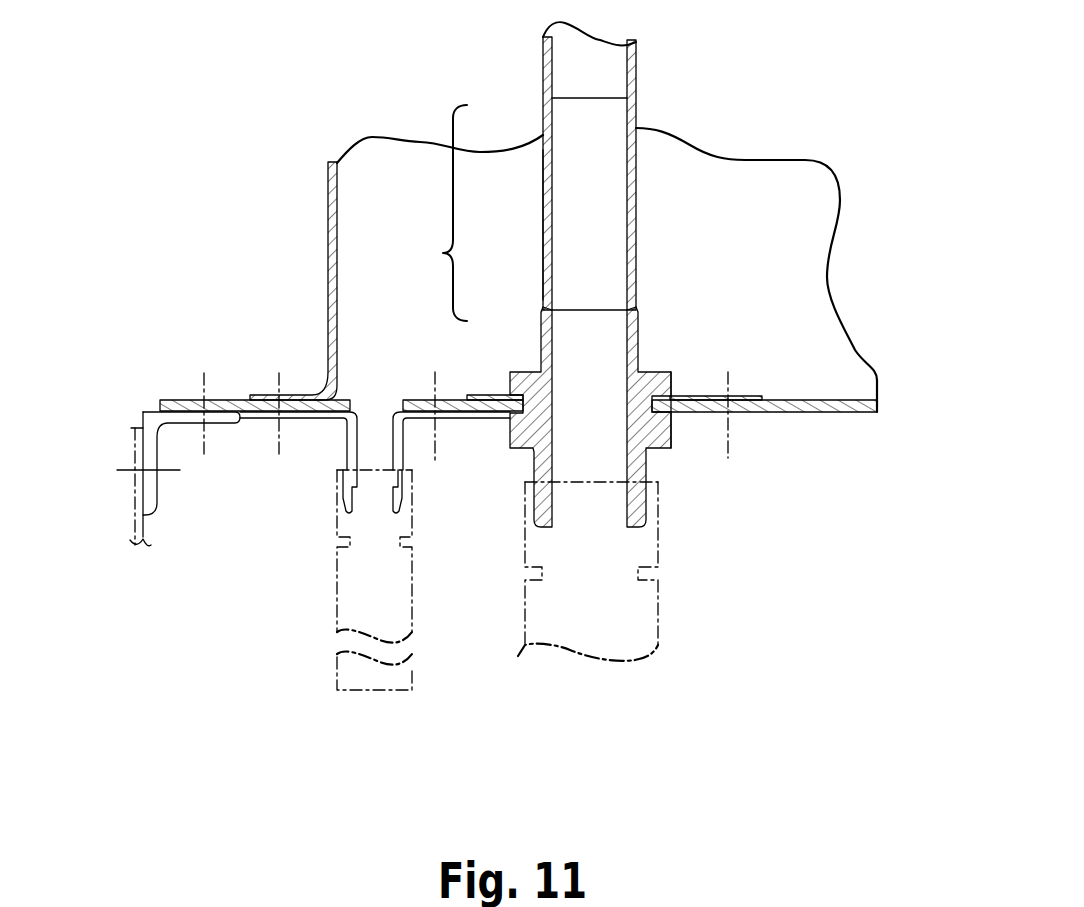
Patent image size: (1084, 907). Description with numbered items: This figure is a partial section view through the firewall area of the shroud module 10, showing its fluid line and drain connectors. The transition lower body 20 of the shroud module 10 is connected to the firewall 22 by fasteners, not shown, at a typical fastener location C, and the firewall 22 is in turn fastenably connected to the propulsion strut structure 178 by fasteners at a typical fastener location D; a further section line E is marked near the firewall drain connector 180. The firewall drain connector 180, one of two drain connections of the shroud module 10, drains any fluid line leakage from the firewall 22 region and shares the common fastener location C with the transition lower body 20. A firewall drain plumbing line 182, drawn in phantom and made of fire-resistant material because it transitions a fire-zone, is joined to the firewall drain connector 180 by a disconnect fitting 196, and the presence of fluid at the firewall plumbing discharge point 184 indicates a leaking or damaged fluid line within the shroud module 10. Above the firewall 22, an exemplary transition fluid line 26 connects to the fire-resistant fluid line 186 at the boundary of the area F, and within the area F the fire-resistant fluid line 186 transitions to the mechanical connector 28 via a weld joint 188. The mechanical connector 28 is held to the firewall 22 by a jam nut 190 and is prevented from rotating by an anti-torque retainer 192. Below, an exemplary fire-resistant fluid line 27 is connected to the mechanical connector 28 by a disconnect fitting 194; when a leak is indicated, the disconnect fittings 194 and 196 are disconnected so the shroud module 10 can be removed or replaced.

The shroud module 10 is at (692, 104).
The transition lower body 20 is at (332, 283).
The firewall 22 is at (180, 402).
The transition fluid line 26 is at (630, 73).
The fire-resistant fluid line 27 is at (653, 612).
The mechanical connector 28 is at (660, 378).
The propulsion strut structure 178 is at (143, 418).
The firewall drain connector 180 is at (343, 432).
The firewall drain plumbing line 182 is at (333, 600).
The firewall plumbing discharge point 184 is at (357, 692).
The fire-resistant fluid line 186 is at (547, 250).
The weld joint 188 is at (633, 312).
The jam nut 190 is at (667, 435).
The anti-torque retainer 192 is at (745, 397).
The disconnect fitting 194 is at (659, 530).
The disconnect fitting 196 is at (413, 510).
The typical fastener location C is at (275, 390).
The typical fastener location D is at (200, 393).
The section line E is at (442, 394).
The area F is at (445, 213).